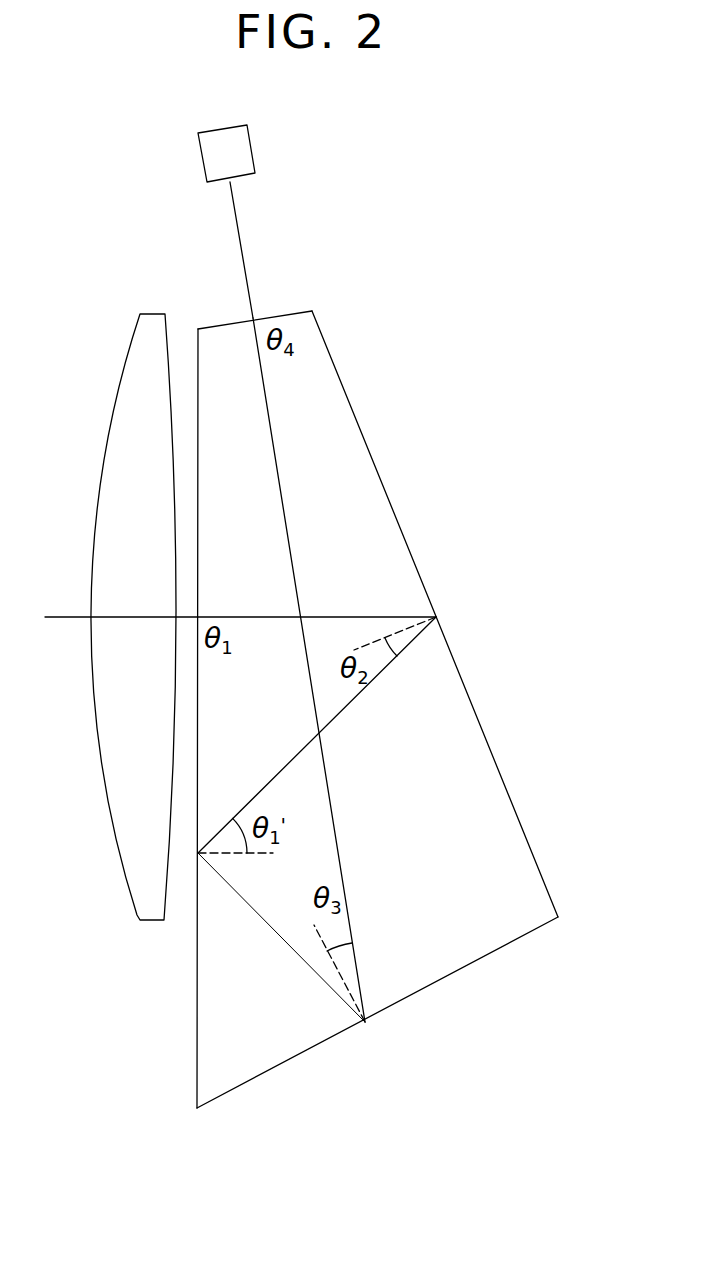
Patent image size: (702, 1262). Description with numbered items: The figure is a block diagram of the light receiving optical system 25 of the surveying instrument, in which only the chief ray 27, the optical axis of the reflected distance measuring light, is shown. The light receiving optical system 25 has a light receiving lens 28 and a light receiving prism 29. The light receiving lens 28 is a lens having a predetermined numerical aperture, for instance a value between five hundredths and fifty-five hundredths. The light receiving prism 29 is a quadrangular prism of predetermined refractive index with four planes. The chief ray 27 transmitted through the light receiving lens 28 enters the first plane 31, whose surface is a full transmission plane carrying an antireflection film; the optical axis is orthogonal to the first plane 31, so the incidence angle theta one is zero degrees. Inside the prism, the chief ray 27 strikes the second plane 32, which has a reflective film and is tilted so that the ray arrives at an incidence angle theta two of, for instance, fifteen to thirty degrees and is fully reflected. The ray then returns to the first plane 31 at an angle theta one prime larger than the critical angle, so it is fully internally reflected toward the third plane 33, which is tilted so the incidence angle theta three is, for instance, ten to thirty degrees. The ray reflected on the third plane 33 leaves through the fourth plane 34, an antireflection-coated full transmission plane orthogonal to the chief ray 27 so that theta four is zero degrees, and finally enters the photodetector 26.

The light receiving optical system 25 is at (90, 214).
The photodetector 26 is at (256, 150).
The chief ray (optical axis) 27 is at (58, 615).
The light receiving lens 28 is at (113, 832).
The light receiving prism 29 is at (319, 655).
The first plane 31 is at (197, 1030).
The second plane 32 is at (477, 717).
The third plane 33 is at (432, 984).
The fourth plane 34 is at (285, 310).